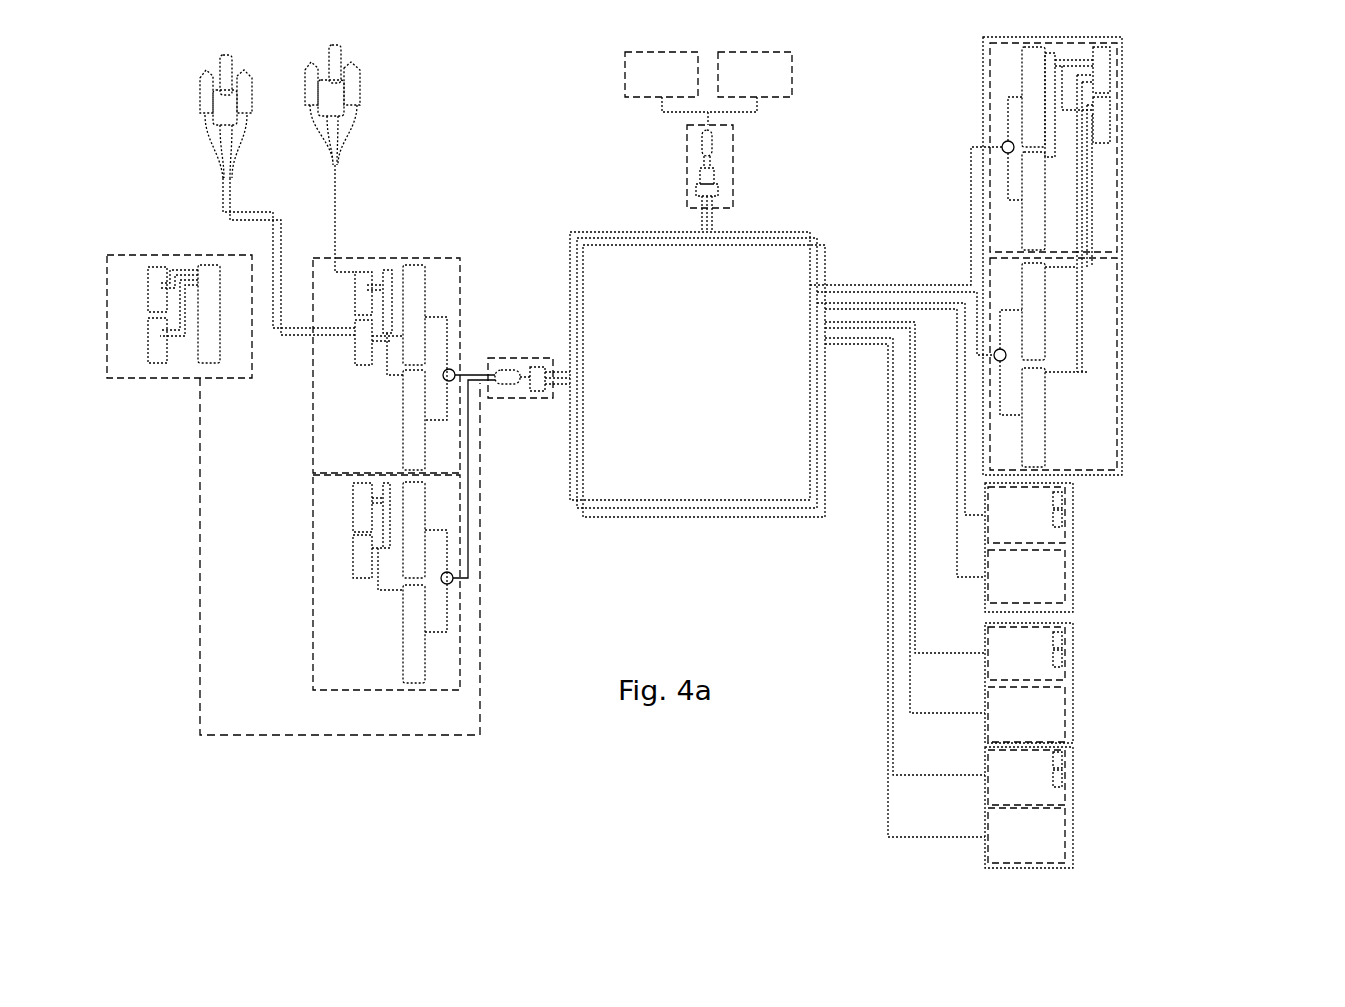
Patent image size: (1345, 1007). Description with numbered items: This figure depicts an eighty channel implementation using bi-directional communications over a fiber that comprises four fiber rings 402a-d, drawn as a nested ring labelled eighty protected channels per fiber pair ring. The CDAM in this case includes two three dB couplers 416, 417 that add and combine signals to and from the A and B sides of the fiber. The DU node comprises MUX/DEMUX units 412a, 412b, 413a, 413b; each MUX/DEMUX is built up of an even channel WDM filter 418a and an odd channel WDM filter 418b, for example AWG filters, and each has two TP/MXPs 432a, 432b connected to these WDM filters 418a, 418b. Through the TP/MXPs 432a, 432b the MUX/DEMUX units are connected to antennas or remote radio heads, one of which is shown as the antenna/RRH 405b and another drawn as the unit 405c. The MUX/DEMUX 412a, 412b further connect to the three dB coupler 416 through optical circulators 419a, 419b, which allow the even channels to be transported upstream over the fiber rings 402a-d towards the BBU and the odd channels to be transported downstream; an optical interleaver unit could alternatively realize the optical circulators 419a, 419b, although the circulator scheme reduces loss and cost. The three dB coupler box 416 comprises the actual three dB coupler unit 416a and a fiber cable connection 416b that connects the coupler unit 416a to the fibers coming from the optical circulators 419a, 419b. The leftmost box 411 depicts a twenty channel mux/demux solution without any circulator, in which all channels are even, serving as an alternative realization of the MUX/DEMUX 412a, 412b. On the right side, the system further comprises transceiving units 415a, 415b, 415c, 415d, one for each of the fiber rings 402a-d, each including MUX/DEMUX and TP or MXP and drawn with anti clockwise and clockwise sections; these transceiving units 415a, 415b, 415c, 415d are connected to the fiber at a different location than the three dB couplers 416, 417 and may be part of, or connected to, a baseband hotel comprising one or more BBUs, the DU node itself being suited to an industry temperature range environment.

The antenna/RRH 405b is at (207, 82).
The transceiver connector 405c is at (362, 82).
The leftmost box 411 is at (168, 378).
The MUX/DEMUX unit 412a is at (386, 323).
The MUX/DEMUX unit 412b is at (395, 535).
The TP/MXP 432a is at (362, 268).
The TP/MXP 432b is at (355, 355).
The even channel WDM filter 418a is at (420, 265).
The odd channel WDM filter 418b is at (403, 432).
The optical circulator 419a is at (452, 369).
The optical circulator 419b is at (455, 582).
The 3 dB coupler box 416 is at (529, 383).
The 3 dB coupler unit 416a is at (538, 360).
The fiber cable connection 416b is at (508, 400).
The MUX/DEMUX unit 413a is at (624, 82).
The MUX/DEMUX unit 413b is at (795, 80).
The 3 dB coupler 417 is at (735, 132).
The fiber rings 402a-d is at (810, 232).
The transceiving unit 415a is at (1123, 118).
The transceiving unit 415b is at (1075, 530).
The transceiving unit 415c is at (1075, 672).
The transceiving unit 415d is at (1075, 793).